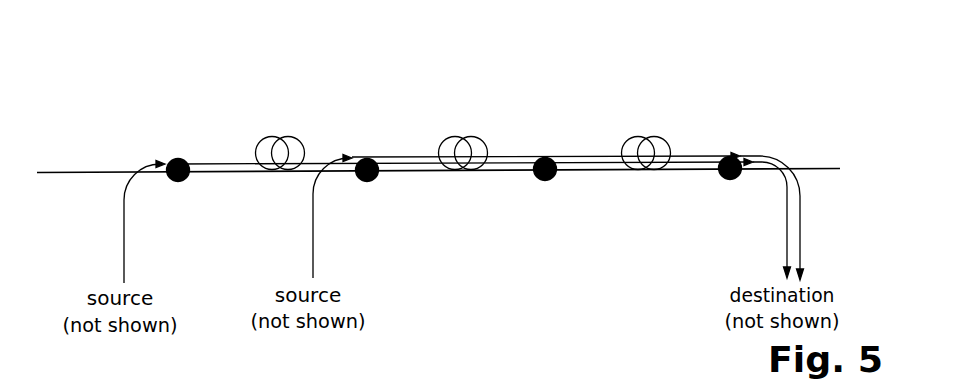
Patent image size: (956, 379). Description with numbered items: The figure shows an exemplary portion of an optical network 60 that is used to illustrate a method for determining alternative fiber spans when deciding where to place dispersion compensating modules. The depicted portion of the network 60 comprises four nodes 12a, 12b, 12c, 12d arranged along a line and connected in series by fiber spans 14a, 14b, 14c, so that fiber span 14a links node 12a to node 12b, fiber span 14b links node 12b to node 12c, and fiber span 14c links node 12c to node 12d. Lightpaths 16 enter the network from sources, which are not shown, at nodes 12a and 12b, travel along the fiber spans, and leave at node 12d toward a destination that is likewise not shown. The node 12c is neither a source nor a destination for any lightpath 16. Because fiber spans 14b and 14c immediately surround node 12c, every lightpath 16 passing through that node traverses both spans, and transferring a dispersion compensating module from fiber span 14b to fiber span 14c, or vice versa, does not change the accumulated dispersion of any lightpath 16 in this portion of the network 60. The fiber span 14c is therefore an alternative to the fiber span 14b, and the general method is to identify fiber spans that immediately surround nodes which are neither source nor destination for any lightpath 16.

The node 12a is at (176, 159).
The node 12b is at (365, 158).
The node 12c is at (544, 158).
The node 12d is at (727, 157).
The fiber span 14a is at (282, 137).
The fiber span 14b is at (465, 137).
The fiber span 14c is at (647, 137).
The lightpath 16 is at (124, 250).
The optical network 60 is at (753, 68).